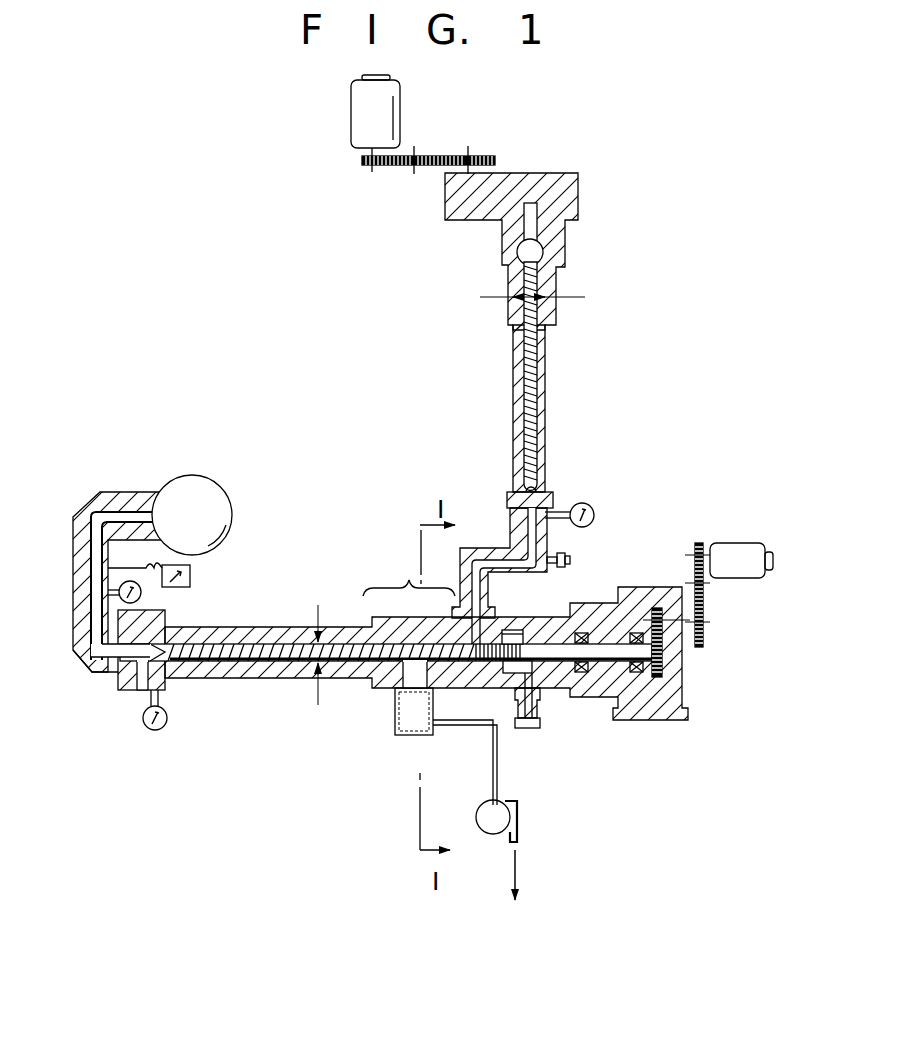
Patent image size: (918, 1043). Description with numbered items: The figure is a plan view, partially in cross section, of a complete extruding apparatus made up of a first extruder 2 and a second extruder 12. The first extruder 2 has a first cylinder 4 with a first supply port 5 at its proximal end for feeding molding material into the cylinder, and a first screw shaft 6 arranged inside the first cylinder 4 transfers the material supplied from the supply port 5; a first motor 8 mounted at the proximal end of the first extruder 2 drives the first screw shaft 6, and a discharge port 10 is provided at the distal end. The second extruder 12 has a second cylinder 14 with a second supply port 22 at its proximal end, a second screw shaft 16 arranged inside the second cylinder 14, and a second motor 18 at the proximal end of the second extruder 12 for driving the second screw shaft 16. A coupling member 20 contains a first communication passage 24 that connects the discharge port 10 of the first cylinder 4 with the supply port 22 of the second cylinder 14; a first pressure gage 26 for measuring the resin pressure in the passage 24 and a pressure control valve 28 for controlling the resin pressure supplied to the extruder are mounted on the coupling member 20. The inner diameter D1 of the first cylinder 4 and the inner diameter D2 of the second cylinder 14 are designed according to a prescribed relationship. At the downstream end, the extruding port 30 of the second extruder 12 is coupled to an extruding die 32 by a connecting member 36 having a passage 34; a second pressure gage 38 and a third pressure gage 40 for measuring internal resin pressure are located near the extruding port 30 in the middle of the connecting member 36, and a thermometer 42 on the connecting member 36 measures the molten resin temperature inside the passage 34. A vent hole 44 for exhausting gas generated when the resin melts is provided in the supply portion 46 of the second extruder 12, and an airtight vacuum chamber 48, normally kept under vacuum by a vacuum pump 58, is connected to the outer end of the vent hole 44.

The first extruder 2 is at (529, 340).
The first cylinder 4 is at (546, 362).
The first supply port 5 is at (538, 252).
The first screw shaft 6 is at (531, 410).
The first motor 8 is at (352, 117).
The discharge port 10 is at (535, 496).
The second extruder 12 is at (404, 659).
The second cylinder 14 is at (268, 666).
The second screw shaft 16 is at (225, 662).
The second motor 18 is at (738, 544).
The coupling member 20 is at (512, 566).
The second supply port 22 is at (472, 632).
The first communication passage 24 is at (534, 576).
The first pressure gage 26 is at (588, 513).
The pressure control valve 28 is at (568, 560).
The extruding port 30 is at (169, 628).
The extruding die 32 is at (231, 508).
The passage 34 is at (96, 674).
The connecting member 36 is at (102, 598).
The second pressure gage 38 is at (166, 722).
The third pressure gage 40 is at (142, 595).
The thermometer 42 is at (192, 578).
The vent hole 44 is at (422, 692).
The supply portion 46 is at (409, 575).
The airtight vacuum chamber 48 is at (402, 728).
The vacuum pump 58 is at (491, 834).
The inner diameter of first cylinder D1 is at (532, 300).
The inner diameter of second cylinder D2 is at (314, 648).